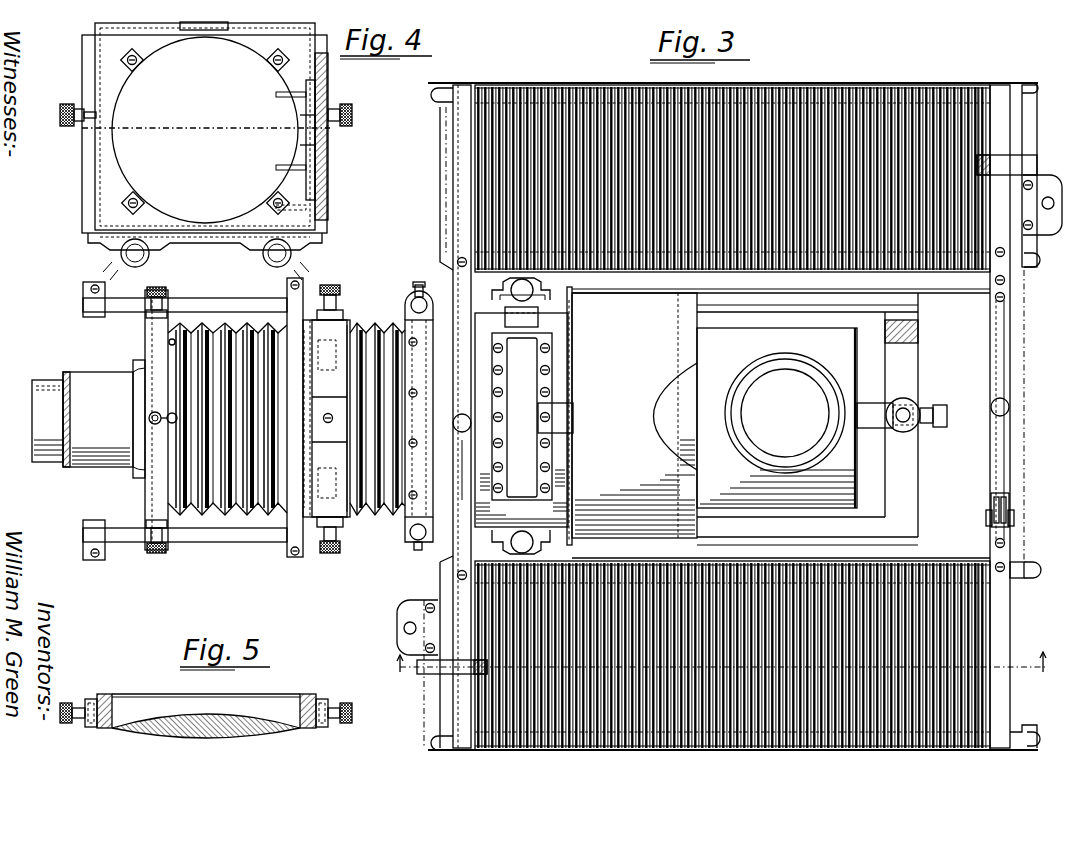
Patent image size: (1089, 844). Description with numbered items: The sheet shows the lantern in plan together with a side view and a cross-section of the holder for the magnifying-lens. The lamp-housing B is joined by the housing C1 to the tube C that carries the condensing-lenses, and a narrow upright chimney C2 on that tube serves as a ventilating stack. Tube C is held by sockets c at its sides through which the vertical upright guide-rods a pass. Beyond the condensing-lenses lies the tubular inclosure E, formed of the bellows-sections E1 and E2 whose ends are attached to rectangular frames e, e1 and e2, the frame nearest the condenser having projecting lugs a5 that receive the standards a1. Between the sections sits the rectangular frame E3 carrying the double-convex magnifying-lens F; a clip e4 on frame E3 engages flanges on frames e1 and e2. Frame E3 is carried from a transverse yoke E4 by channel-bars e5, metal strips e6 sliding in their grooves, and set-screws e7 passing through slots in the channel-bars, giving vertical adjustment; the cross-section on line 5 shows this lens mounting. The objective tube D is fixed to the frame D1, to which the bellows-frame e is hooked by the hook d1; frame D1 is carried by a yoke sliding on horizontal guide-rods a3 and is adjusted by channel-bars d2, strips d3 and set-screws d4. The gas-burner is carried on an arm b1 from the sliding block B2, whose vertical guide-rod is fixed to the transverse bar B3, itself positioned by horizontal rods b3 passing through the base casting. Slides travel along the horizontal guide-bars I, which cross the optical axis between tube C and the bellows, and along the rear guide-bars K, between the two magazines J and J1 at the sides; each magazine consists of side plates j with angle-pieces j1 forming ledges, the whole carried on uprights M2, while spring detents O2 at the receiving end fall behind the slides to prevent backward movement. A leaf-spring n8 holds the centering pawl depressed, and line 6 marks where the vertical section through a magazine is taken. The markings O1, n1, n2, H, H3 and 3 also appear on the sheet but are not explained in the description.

In FIG. 3, the slide magazine J is at (808, 88).
In FIG. 3, the slide magazine J1 is at (748, 752).
In FIG. 3, the side plate j is at (892, 88).
In FIG. 3, the angle-piece j1 is at (954, 88).
In FIG. 3, the upright post M2 is at (1032, 82).
In FIG. 3, the hinge lug O1 is at (1052, 200).
In FIG. 3, the spring detent O2 is at (1018, 165).
In FIG. 3, the transverse guide-bar K is at (1012, 407).
In FIG. 3, the leaf-spring n8 is at (1012, 455).
In FIG. 3, the clamp n2 is at (1012, 497).
In FIG. 3, the clamp screw n1 is at (1010, 519).
In FIG. 3, the horizontal guide-bar I is at (447, 416).
In FIG. 3, the section line 3 is at (467, 472).
In FIG. 3, the condensing-lens tube C is at (476, 318).
In FIG. 3, the housing C1 is at (634, 415).
In FIG. 3, the ventilating chimney C2 is at (540, 420).
In FIG. 3, the socket c is at (568, 300).
In FIG. 3, the upright a is at (515, 290).
In FIG. 3, the standard a1 is at (533, 290).
In FIG. 3, the horizontal guide-rod a3 is at (183, 300).
In FIG. 3, the projecting lug a5 is at (416, 296).
In FIG. 3, the lamp-housing B is at (800, 360).
In FIG. 3, the sliding block B2 is at (912, 398).
In FIG. 3, the transverse supporting-bar B3 is at (908, 475).
In FIG. 3, the burner arm b1 is at (870, 405).
In FIG. 3, the horizontal rod b3 is at (810, 310).
In FIG. 3, the objective-lens tube D is at (82, 419).
In FIG. 3, the lens-tube frame D1 is at (144, 484).
In FIG. 3, the hook d1 is at (153, 426).
In FIG. 3, the channel-bar d2 is at (146, 311).
In FIG. 3, the metal strip d3 is at (150, 318).
In FIG. 3, the set-screw d4 is at (162, 286).
In FIG. 3, the tubular inclosure E is at (340, 300).
In FIG. 3, the bellows-section E1 is at (216, 325).
In FIG. 3, the bellows-section E2 is at (372, 330).
In FIG. 4, the lens frame E3 is at (262, 52).
In FIG. 5, the lens frame E3 is at (108, 692).
In FIG. 3, the lens frame E3 is at (329, 418).
In FIG. 4, the transverse yoke E4 is at (222, 238).
In FIG. 3, the bellows end frame e is at (432, 497).
In FIG. 3, the bellows end frame e1 is at (290, 515).
In FIG. 3, the bellows end frame e2 is at (349, 516).
In FIG. 4, the clip e4 is at (210, 32).
In FIG. 3, the clip e4 is at (329, 430).
In FIG. 4, the channel-bar e5 is at (320, 162).
In FIG. 5, the channel-bar e5 is at (92, 729).
In FIG. 4, the metal strip e6 is at (322, 146).
In FIG. 5, the metal strip e6 is at (320, 729).
In FIG. 4, the set-screw e7 is at (354, 116).
In FIG. 5, the set-screw e7 is at (345, 724).
In FIG. 4, the magnifying-lens F is at (205, 130).
In FIG. 5, the magnifying-lens F is at (206, 740).
In FIG. 4, the roller H is at (205, 261).
In FIG. 3, the bracket H3 is at (290, 290).
In FIG. 4, the section line 5 is at (50, 94).
In FIG. 3, the section line 6 is at (723, 660).